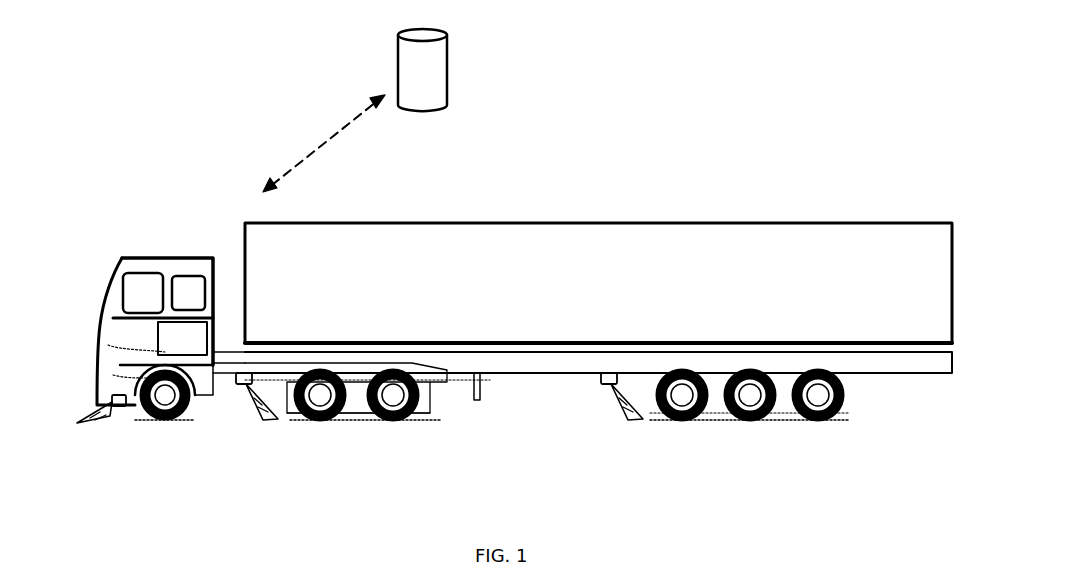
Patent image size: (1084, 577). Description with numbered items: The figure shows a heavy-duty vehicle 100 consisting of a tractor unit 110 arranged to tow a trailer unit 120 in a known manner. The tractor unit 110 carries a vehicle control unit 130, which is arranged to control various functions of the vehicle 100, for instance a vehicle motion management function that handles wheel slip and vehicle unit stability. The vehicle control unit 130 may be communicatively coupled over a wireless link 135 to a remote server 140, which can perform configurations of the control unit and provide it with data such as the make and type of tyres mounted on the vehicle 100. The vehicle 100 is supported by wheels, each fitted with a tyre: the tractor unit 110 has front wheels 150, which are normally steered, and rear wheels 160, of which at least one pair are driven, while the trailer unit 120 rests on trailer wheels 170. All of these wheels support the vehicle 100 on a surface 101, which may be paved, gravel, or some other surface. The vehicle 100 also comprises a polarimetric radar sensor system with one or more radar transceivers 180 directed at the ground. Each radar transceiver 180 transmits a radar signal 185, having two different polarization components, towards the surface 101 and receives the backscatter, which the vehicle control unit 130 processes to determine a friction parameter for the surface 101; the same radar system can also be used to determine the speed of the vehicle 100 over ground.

The heavy-duty vehicle 100 is at (133, 166).
The surface 101 is at (187, 420).
The tractor unit 110 is at (138, 258).
The trailer unit 120 is at (437, 222).
The vehicle control unit 130 is at (182, 338).
The wireless link 135 is at (324, 143).
The remote server 140 is at (450, 80).
The front wheels 150 is at (140, 432).
The rear wheels 160 is at (320, 432).
The trailer wheels 170 is at (812, 445).
The radar transceiver 180 is at (118, 395).
The radar signal 185 is at (97, 423).